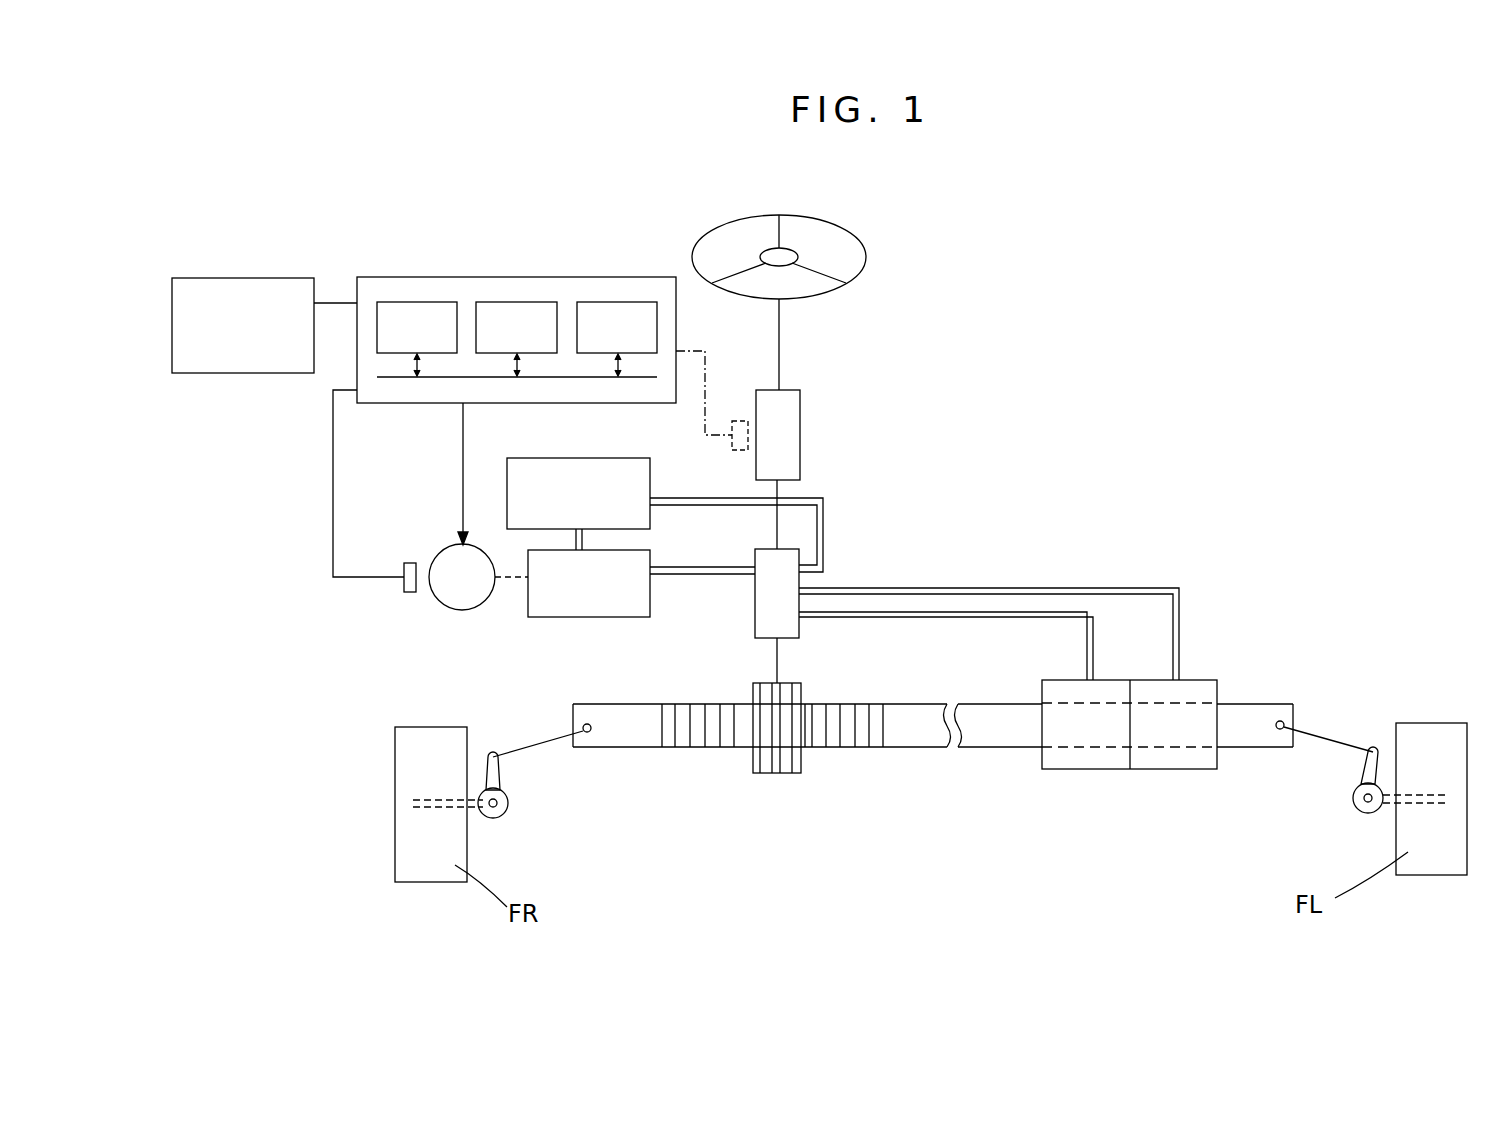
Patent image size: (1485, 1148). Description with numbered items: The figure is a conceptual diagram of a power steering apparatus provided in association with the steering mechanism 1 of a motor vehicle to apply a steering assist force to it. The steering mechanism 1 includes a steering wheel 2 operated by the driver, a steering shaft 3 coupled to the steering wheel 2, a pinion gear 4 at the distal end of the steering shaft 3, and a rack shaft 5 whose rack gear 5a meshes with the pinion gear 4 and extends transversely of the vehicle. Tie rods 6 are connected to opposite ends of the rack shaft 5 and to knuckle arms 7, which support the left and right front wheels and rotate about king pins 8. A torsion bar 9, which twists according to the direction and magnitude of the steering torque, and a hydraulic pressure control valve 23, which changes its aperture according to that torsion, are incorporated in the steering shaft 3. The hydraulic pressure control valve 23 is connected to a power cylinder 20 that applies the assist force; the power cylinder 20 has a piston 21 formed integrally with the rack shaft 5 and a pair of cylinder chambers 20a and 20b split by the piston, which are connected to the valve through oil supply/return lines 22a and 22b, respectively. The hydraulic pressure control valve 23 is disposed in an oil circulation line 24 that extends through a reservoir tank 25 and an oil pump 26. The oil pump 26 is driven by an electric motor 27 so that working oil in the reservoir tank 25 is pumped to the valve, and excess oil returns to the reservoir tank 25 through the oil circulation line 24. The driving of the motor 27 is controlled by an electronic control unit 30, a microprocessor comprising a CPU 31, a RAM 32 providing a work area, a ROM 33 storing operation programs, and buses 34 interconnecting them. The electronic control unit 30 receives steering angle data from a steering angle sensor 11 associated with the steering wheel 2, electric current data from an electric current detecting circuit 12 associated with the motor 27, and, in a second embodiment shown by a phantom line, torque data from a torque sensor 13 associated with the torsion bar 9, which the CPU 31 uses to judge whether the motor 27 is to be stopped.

The steering mechanism 1 is at (888, 408).
The steering wheel 2 is at (823, 220).
The steering shaft 3 is at (783, 367).
The pinion gear 4 is at (770, 771).
The rack shaft 5 is at (922, 735).
The rack gear 5a is at (718, 742).
The tie rods 6 is at (532, 747).
The knuckle arms 7 is at (508, 805).
The king pins 8 is at (497, 813).
The torsion bar 9 is at (792, 445).
The steering angle sensor 11 is at (227, 277).
The electric current detecting circuit 12 is at (398, 589).
The torque sensor 13 is at (737, 449).
The power cylinder 20 is at (1207, 678).
The cylinder chamber 20a is at (1097, 758).
The cylinder chamber 20b is at (1185, 758).
The piston 21 is at (1130, 752).
The oil supply/return line 22a is at (1007, 617).
The oil supply/return line 22b is at (1035, 588).
The hydraulic pressure control valve 23 is at (760, 603).
The oil circulation line 24 is at (825, 535).
The reservoir tank 25 is at (563, 458).
The oil pump 26 is at (568, 617).
The electric motor 27 is at (459, 604).
The electronic control unit 30 is at (645, 277).
The CPU 31 is at (417, 305).
The RAM 32 is at (612, 303).
The ROM 33 is at (527, 305).
The buses 34 is at (447, 378).